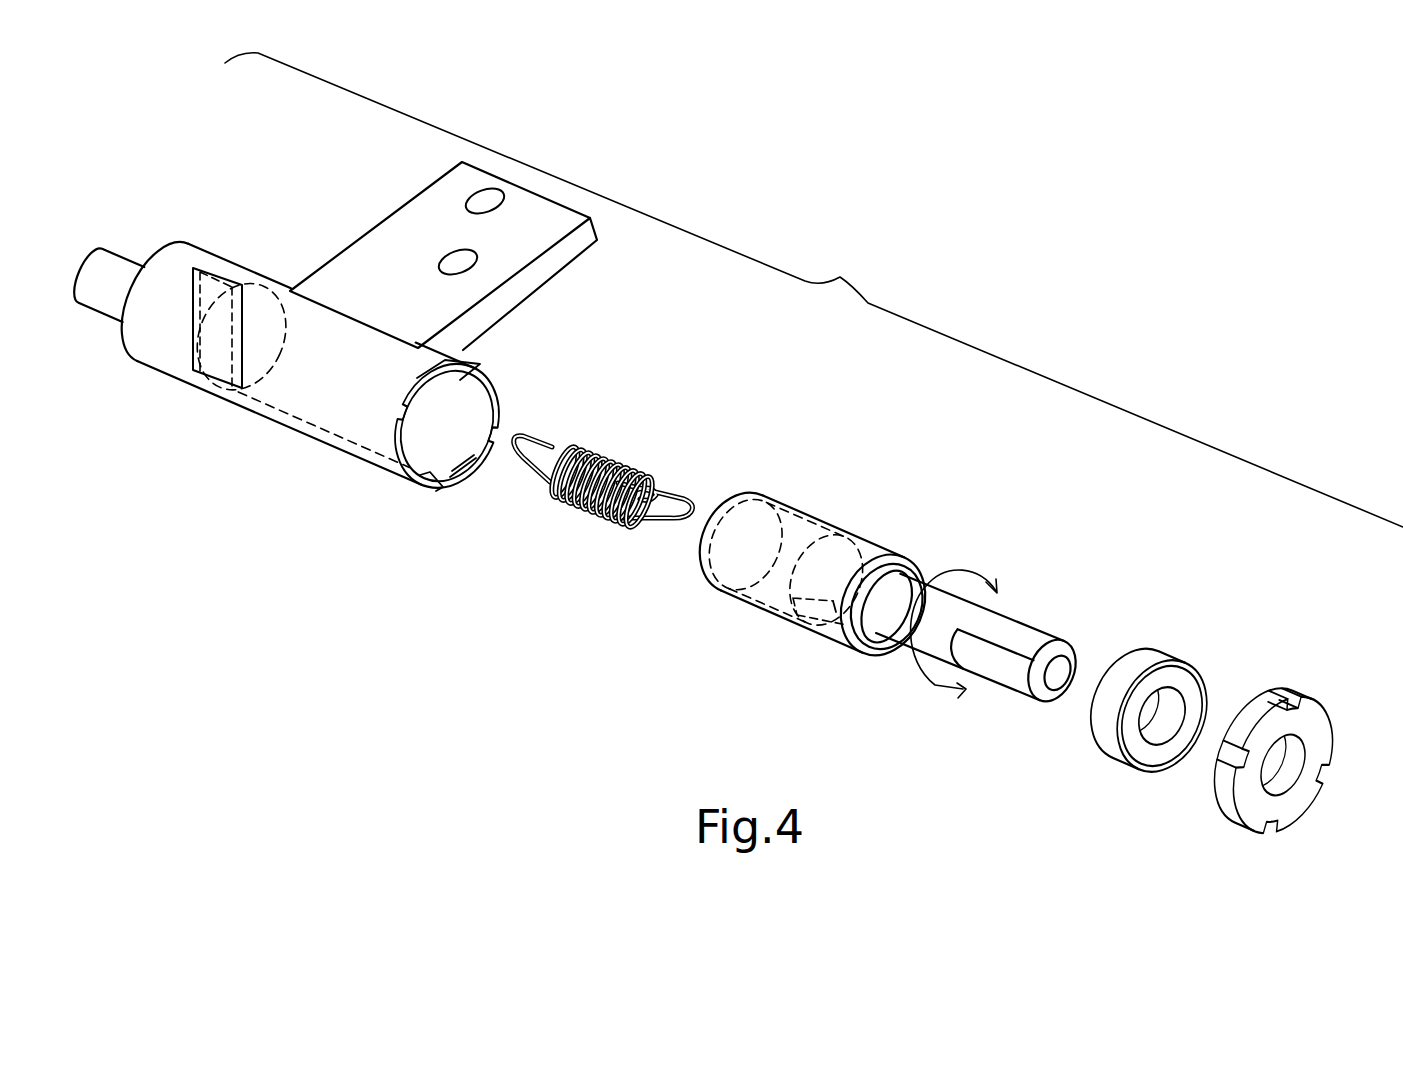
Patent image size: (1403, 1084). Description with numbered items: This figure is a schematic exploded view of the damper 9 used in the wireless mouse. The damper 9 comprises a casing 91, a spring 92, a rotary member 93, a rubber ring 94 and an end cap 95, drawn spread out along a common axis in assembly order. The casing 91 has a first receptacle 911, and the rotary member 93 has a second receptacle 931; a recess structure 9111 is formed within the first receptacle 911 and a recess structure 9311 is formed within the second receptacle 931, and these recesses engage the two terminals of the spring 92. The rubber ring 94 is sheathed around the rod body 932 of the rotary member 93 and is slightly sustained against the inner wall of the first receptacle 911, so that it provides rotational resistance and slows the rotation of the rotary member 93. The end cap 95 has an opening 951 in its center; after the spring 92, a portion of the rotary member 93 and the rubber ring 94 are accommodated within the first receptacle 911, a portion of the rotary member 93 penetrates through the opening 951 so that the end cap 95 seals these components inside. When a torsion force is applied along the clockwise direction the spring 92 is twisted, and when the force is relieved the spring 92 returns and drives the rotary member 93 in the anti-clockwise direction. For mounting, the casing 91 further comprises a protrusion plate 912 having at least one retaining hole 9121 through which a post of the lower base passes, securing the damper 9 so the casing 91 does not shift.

The damper 9 is at (814, 290).
The casing 91 is at (246, 214).
The first receptacle 911 is at (320, 428).
The recess structure 9111 is at (206, 360).
The protrusion plate 912 is at (382, 243).
The retaining hole 9121 is at (472, 190).
The spring 92 is at (610, 436).
The rotary member 93 is at (907, 512).
The second receptacle 931 is at (740, 598).
The recess structure 9311 is at (800, 605).
The shaft 932 is at (1020, 648).
The rubber ring 94 is at (1178, 646).
The end cap 95 is at (1303, 688).
The opening 951 is at (1281, 778).